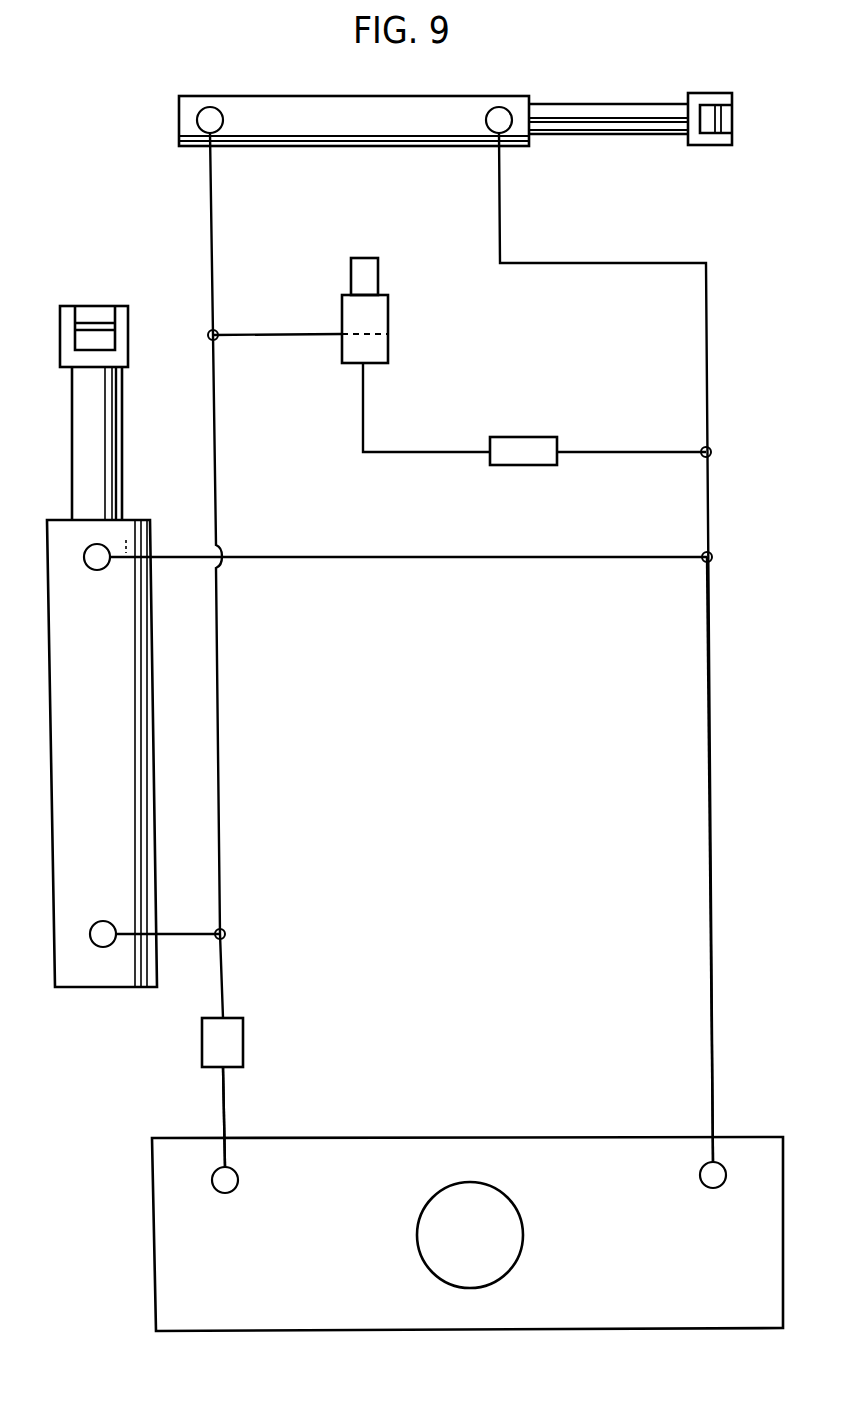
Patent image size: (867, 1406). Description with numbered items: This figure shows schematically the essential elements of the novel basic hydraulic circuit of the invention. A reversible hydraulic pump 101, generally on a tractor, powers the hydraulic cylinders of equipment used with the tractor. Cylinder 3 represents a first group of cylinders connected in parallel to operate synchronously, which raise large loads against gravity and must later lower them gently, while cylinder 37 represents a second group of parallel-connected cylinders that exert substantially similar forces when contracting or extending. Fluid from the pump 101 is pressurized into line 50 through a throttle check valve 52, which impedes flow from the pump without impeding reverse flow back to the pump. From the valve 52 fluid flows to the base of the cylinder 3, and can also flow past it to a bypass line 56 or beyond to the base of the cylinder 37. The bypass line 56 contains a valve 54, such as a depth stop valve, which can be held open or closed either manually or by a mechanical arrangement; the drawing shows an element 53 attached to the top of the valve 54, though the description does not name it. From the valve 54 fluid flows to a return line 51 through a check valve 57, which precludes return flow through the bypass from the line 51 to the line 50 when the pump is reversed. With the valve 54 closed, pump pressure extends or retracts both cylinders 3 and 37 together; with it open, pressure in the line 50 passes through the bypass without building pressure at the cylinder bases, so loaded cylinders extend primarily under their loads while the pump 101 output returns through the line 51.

The hydraulic cylinder 37 is at (276, 107).
The hydraulic cylinder 3 is at (143, 653).
The solenoid 53 is at (371, 270).
The depth stop valve 54 is at (388, 325).
The bypass line 56 is at (363, 405).
The check valve 57 is at (525, 437).
The throttle check valve 52 is at (236, 1050).
The line 50 is at (224, 1112).
The return line 51 is at (713, 1042).
The reversible hydraulic pump 101 is at (490, 1137).